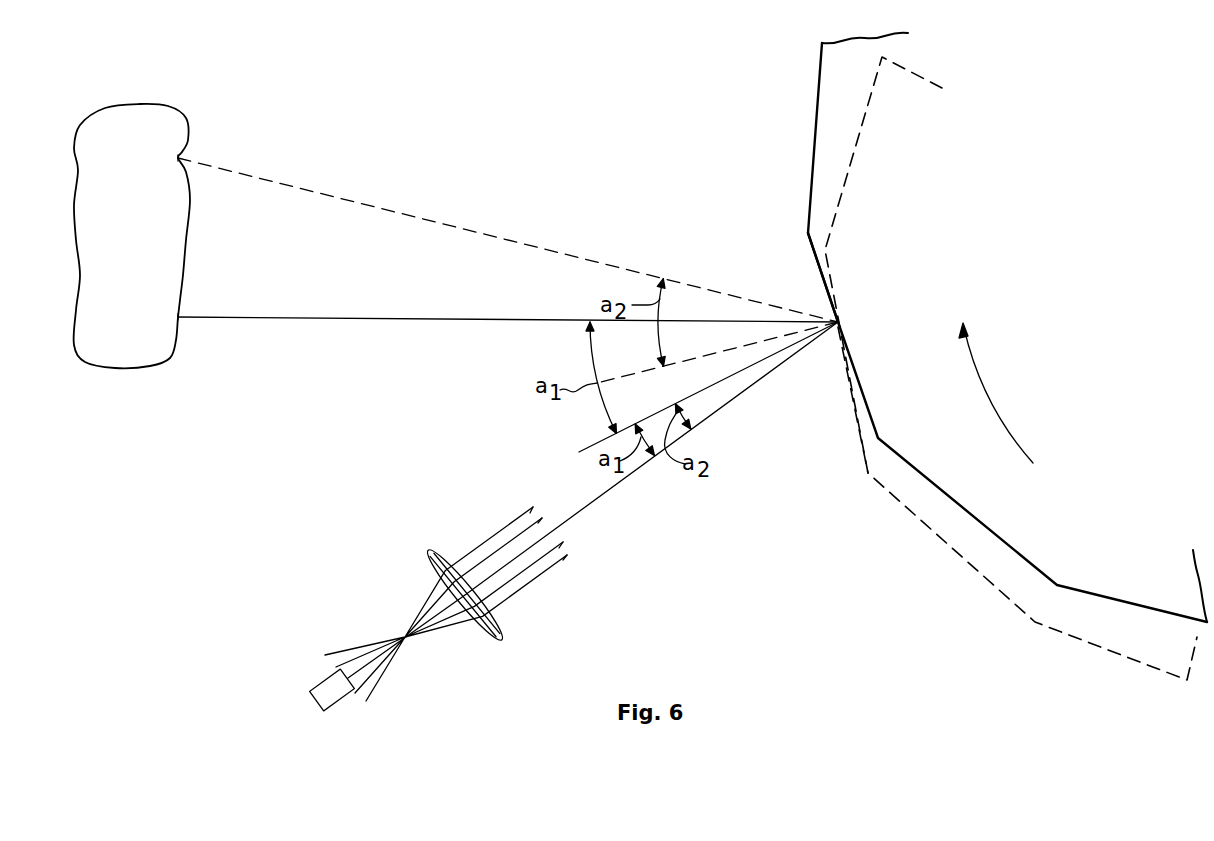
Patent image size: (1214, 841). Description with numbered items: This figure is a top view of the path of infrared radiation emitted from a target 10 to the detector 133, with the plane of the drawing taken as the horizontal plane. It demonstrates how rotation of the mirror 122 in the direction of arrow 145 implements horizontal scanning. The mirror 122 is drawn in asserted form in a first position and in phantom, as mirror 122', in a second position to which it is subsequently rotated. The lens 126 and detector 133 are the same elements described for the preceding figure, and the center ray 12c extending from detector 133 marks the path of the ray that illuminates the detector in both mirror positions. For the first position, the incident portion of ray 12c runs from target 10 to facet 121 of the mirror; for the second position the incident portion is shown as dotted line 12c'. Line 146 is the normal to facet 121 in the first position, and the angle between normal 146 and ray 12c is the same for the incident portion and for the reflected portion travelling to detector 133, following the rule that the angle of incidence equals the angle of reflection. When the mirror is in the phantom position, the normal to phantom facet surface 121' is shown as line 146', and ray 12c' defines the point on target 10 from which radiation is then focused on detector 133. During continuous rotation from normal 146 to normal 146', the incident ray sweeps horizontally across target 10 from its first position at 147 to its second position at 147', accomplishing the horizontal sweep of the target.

The target 10 is at (195, 109).
The first position of incident ray on target 147 is at (209, 300).
The second position of incident ray on target 147' is at (226, 144).
The center ray 12c is at (508, 479).
The center ray for second mirror position 12c' is at (508, 240).
The normal to facet surface 146 is at (688, 387).
The normal to phantom facet surface 146' is at (717, 352).
The facet 121 is at (790, 277).
The phantom facet surface 121' is at (836, 400).
The mirror 122 is at (1007, 327).
The mirror in second position 122' is at (1011, 368).
The arrow indicating direction of rotation 145 is at (993, 400).
The lens 126 is at (428, 550).
The detector 133 is at (297, 681).